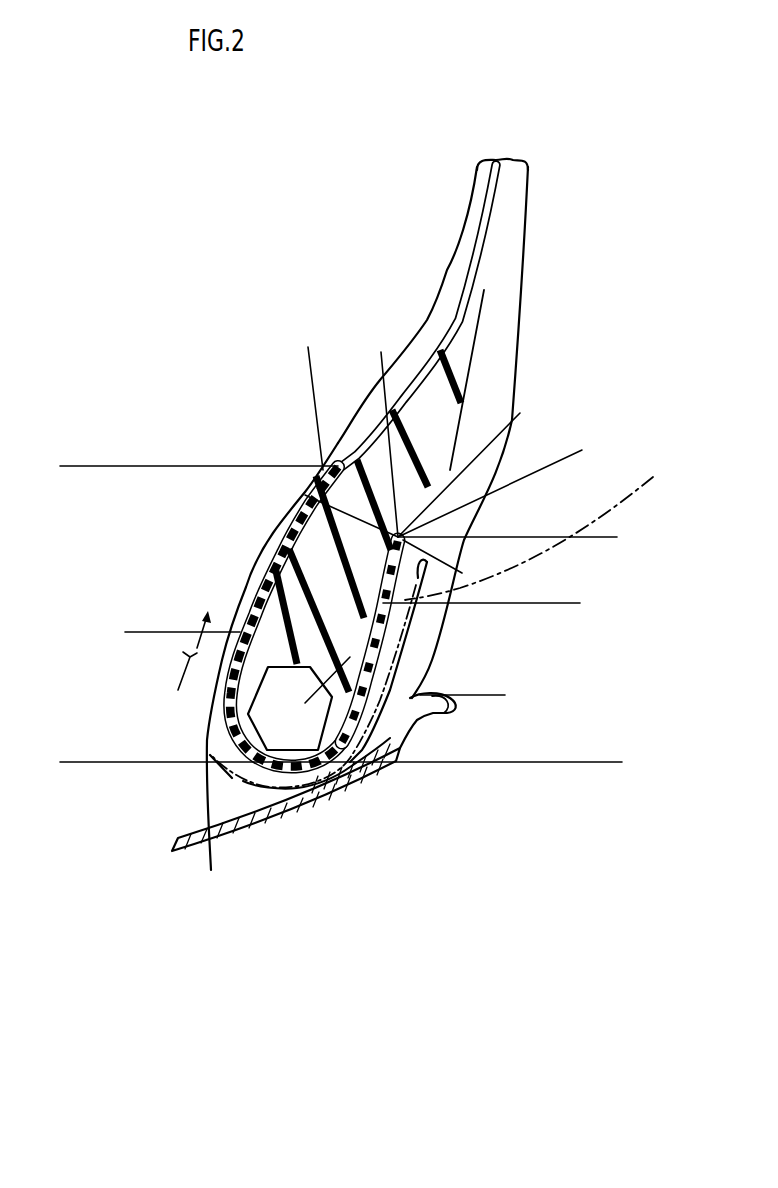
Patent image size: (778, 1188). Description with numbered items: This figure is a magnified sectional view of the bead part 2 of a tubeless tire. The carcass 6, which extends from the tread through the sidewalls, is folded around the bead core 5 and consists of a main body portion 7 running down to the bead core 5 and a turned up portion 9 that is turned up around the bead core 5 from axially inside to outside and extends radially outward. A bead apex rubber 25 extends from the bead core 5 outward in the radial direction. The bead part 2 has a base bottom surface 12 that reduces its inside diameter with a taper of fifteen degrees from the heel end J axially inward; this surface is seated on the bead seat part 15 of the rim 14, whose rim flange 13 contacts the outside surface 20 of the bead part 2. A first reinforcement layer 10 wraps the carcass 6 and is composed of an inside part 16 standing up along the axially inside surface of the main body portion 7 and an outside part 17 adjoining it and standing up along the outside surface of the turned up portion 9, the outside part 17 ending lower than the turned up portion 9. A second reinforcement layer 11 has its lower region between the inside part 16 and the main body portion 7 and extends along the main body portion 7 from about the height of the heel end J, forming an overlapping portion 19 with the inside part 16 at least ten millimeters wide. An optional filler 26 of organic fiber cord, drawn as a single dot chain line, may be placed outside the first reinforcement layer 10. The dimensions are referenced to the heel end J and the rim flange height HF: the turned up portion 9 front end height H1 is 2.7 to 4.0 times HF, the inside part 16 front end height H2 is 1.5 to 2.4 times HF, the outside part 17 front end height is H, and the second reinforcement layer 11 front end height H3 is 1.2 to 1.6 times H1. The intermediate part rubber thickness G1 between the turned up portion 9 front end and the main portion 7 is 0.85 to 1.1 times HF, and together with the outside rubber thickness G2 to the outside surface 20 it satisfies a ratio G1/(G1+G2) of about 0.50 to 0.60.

The bead part 2 is at (150, 778).
The bead core 5 is at (305, 703).
The carcass 6 is at (312, 466).
The main body portion 7 is at (457, 312).
The turned up portion 9 is at (390, 583).
The first reinforcement layer 10 is at (178, 987).
The second reinforcement layer 11 is at (277, 575).
The base bottom surface 12 is at (282, 745).
The rim flange 13 is at (413, 727).
The rim 14 is at (362, 812).
The bead seat part 15 is at (298, 790).
The inside part 16 is at (226, 696).
The outside part 17 is at (212, 826).
The overlapping portion 19 is at (225, 658).
The outside surface 20 is at (433, 650).
The bead apex rubber 25 is at (423, 411).
The filler 26 is at (547, 530).
The intermediate part rubber thickness G1 is at (382, 372).
The outside rubber thickness G2 is at (578, 450).
The outside part front end height H is at (563, 605).
The height of the front end of the turned up portion H1 is at (607, 539).
The height of the front end of the inside part H2 is at (138, 634).
The height of the front end of the second reinforcement layer H3 is at (72, 468).
The rim flange height HF is at (483, 697).
The heel end J is at (380, 768).